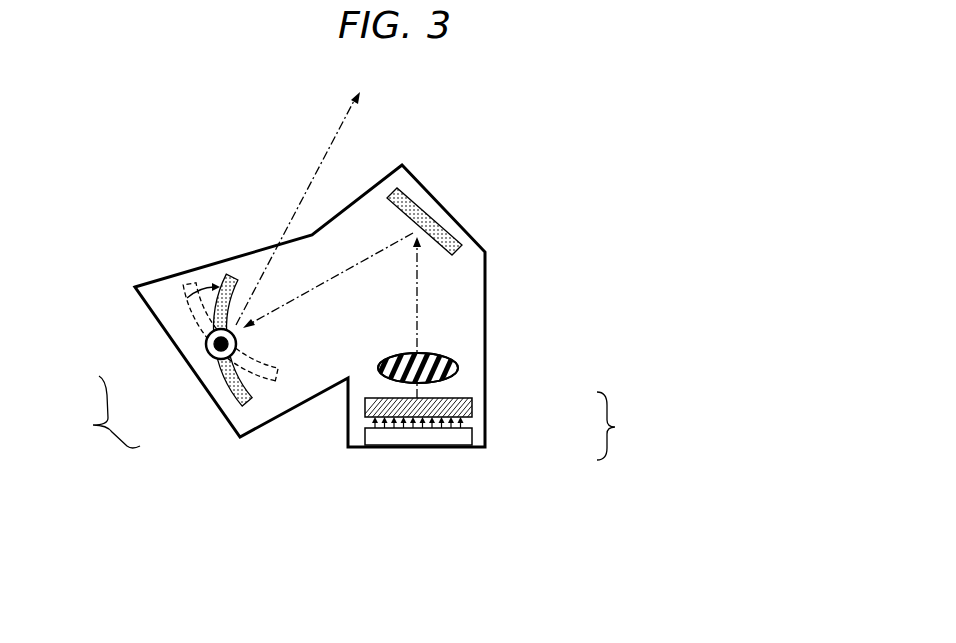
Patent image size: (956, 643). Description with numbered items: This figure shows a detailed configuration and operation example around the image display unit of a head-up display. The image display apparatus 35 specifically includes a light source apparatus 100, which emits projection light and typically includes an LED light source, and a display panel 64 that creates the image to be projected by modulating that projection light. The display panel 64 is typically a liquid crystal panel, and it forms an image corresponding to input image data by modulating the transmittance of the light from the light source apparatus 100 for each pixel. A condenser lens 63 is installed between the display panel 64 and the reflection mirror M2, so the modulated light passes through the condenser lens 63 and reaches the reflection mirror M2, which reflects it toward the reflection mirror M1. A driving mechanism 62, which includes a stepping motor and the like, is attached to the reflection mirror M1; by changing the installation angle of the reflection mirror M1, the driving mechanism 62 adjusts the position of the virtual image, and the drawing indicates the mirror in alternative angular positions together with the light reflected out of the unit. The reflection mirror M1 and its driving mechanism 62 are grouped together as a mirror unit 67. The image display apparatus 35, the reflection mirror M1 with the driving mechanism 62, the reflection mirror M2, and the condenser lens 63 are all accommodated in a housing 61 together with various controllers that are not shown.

The housing 61 is at (163, 279).
The driving mechanism 62 is at (206, 353).
The reflection mirror M1 is at (225, 378).
The mirror unit 67 is at (95, 412).
The reflection mirror M2 is at (428, 217).
The condenser lens 63 is at (457, 367).
The display panel 64 is at (472, 407).
The light source apparatus 100 is at (472, 435).
The image display apparatus 35 is at (628, 426).